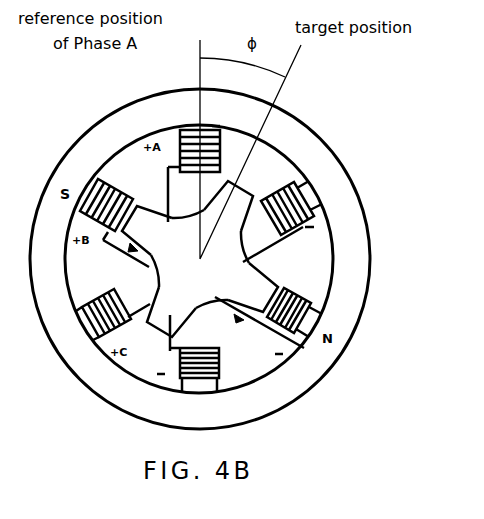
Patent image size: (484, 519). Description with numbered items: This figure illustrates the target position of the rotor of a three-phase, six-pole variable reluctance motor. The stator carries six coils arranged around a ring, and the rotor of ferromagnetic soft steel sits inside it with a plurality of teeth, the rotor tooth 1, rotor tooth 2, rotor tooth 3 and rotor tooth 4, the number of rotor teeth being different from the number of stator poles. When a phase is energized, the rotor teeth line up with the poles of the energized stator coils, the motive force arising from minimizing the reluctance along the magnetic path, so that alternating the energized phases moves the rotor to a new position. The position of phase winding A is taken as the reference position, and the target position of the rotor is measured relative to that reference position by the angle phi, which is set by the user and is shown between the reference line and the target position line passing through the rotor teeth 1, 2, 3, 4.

The rotor tooth 1 is at (228, 206).
The rotor tooth 2 is at (253, 287).
The rotor tooth 3 is at (171, 312).
The rotor tooth 4 is at (147, 230).